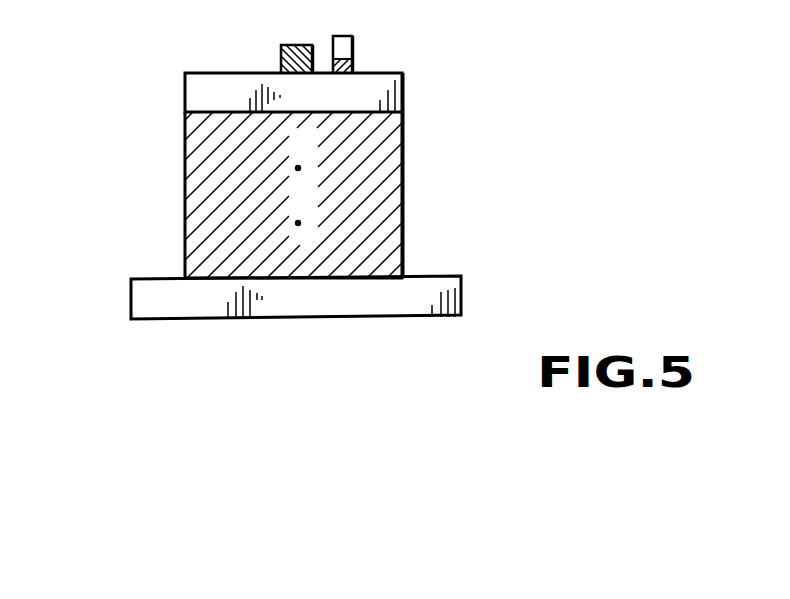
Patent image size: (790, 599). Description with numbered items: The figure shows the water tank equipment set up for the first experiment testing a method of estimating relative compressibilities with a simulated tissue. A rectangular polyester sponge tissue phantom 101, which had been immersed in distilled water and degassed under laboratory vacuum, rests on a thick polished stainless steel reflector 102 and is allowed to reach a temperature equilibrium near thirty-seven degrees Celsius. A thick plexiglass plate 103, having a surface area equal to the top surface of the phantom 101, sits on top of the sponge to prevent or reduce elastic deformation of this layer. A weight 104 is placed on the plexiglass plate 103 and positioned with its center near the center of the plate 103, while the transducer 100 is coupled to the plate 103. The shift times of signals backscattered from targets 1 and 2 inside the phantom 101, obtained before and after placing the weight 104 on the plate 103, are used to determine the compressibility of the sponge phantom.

The transducer 100 is at (354, 46).
The sponge tissue phantom 101 is at (203, 175).
The polished stainless steel reflector 102 is at (147, 301).
The plexiglass plate 103 is at (193, 100).
The weight 104 is at (280, 53).
The target 1 is at (307, 156).
The target 2 is at (307, 217).